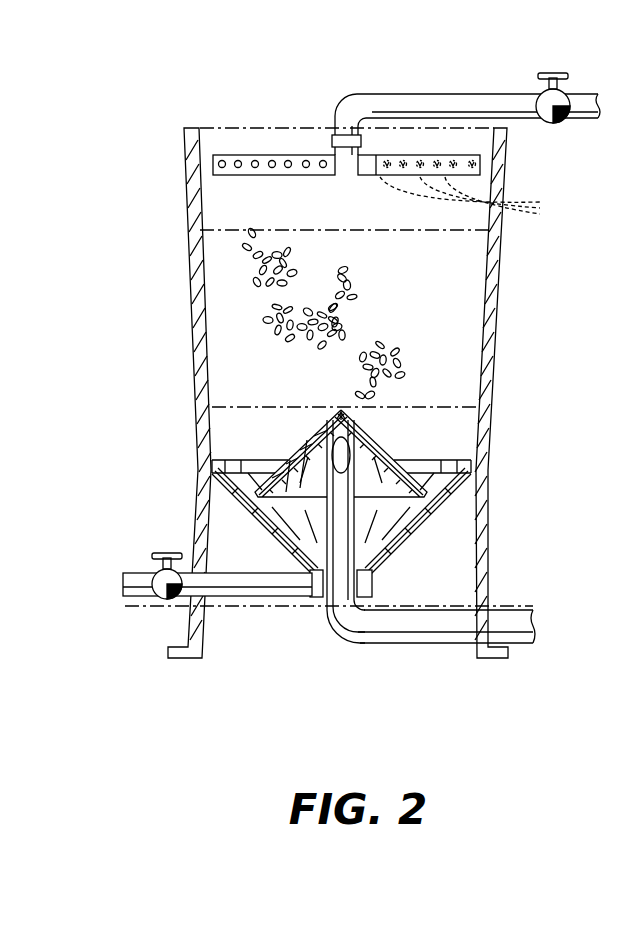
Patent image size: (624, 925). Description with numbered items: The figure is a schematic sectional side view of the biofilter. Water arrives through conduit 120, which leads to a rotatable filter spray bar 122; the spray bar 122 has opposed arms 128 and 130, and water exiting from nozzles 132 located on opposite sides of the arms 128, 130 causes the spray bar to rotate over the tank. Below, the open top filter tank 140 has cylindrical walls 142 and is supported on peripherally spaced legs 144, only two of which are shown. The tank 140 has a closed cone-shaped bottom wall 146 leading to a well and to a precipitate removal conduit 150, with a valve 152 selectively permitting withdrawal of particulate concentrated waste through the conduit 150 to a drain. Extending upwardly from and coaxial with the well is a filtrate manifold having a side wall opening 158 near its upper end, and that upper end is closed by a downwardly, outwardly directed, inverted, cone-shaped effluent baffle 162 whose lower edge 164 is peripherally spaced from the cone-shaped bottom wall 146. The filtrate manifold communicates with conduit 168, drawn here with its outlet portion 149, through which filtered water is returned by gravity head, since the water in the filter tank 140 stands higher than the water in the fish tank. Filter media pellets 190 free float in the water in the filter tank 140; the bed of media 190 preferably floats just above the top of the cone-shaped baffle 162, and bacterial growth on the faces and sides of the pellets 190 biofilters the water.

The conduit 120 is at (437, 98).
The rotatable filter spray bar 122 is at (271, 154).
The arm 128 is at (212, 170).
The arm 130 is at (490, 156).
The nozzles 132 is at (239, 156).
The open top filter tank 140 is at (187, 309).
The cylindrical walls 142 is at (198, 371).
The legs 144 is at (197, 524).
The cone-shaped bottom wall 146 is at (400, 545).
The outlet pipe 149 is at (382, 633).
The precipitate removal conduit 150 is at (233, 590).
The valve 152 is at (150, 580).
The side wall opening 158 is at (350, 455).
The effluent baffle 162 is at (300, 430).
The lower edge 164 is at (427, 497).
The conduit 168 is at (383, 646).
The filter media pellets 190 is at (377, 397).